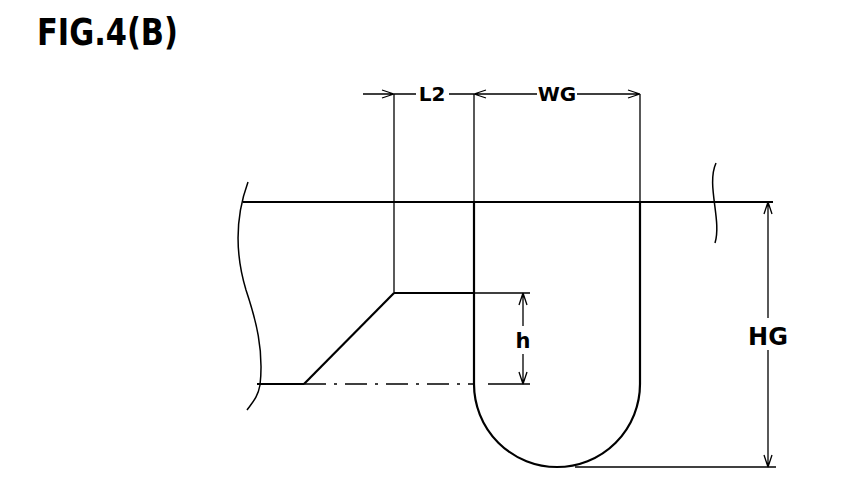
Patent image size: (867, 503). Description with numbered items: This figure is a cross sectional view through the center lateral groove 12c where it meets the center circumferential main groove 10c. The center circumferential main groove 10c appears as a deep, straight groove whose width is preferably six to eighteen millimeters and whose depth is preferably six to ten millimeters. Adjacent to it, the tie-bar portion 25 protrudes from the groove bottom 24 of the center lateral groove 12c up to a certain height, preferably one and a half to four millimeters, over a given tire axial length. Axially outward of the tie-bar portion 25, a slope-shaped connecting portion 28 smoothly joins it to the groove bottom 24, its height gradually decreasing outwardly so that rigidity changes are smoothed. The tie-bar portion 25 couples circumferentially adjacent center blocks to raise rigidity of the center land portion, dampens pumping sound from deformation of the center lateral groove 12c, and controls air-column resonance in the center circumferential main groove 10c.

The center circumferential main groove 10c is at (539, 268).
The center lateral groove 12c is at (272, 254).
The groove bottom 24 is at (287, 382).
The tie-bar portion 25 is at (420, 293).
The connecting portion 28 is at (350, 337).